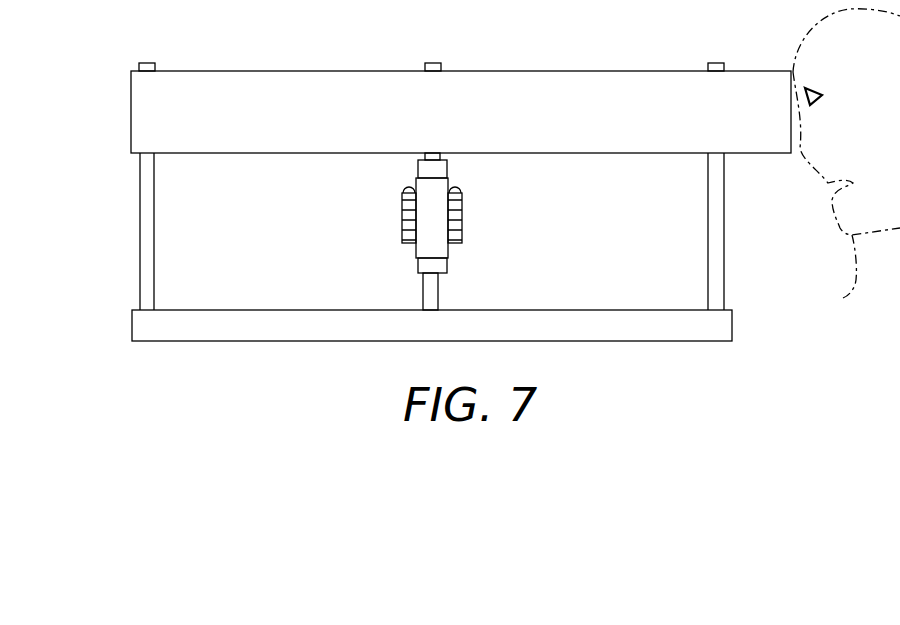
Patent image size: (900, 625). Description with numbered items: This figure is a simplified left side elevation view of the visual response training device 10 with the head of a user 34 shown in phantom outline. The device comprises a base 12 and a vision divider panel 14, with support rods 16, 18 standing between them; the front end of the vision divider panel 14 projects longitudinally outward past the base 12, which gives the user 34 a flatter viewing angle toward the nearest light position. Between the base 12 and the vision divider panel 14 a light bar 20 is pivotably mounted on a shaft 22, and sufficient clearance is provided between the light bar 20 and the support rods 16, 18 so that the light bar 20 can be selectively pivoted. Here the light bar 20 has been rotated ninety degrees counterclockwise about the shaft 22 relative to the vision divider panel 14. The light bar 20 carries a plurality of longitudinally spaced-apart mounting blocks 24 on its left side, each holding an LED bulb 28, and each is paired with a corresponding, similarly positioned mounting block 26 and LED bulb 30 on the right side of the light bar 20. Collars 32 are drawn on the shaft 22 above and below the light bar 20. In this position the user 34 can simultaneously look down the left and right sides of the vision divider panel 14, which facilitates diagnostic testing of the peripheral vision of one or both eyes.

The visual response training device 10 is at (222, 42).
The base 12 is at (287, 330).
The vision divider panel 14 is at (658, 82).
The support rod 16 is at (150, 200).
The support rod 18 is at (718, 207).
The light bar 20 is at (448, 250).
The shaft 22 is at (421, 158).
The mounting block 24 is at (462, 201).
The mounting block 26 is at (398, 201).
The LED bulb 28 is at (462, 184).
The LED bulb 30 is at (403, 186).
The shaft collar 32 is at (445, 171).
The user 34 is at (851, 286).